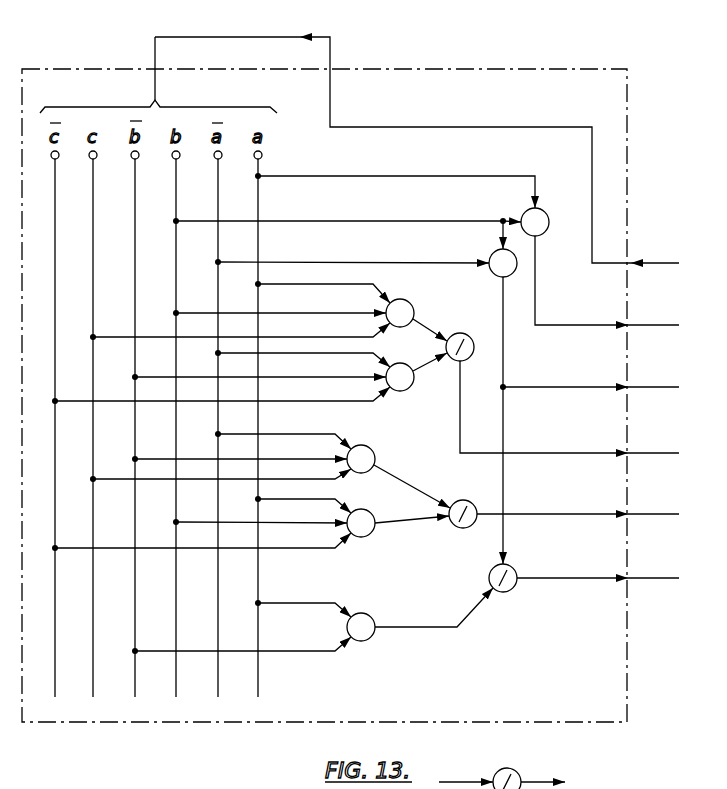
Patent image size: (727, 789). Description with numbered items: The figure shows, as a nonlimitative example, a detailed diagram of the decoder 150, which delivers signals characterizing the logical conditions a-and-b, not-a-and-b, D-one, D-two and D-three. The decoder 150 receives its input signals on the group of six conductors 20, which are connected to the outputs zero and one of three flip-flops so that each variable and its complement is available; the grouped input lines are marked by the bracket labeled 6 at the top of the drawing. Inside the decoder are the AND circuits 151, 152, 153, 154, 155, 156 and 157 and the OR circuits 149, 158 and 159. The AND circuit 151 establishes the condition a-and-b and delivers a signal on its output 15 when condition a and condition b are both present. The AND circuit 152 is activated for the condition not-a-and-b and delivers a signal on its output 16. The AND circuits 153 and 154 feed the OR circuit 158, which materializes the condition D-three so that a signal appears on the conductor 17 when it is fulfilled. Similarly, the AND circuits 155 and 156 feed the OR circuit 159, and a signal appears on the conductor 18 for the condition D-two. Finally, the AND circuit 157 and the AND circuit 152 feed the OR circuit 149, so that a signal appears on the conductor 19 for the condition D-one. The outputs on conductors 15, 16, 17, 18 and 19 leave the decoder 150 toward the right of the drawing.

The input bus 6 is at (158, 60).
The group of six conductors 20 is at (417, 139).
The decoder 150 is at (607, 88).
The AND circuit 151 is at (552, 230).
The AND circuit 152 is at (486, 255).
The AND circuit 153 is at (413, 301).
The AND circuit 154 is at (408, 393).
The AND circuit 155 is at (381, 450).
The AND circuit 156 is at (381, 535).
The AND circuit 157 is at (379, 617).
The OR circuit 158 is at (466, 336).
The OR circuit 159 is at (468, 503).
The OR circuit 149 is at (522, 570).
The output 15 is at (607, 281).
The output 16 is at (591, 378).
The conductor 17 is at (569, 407).
The conductor 18 is at (578, 501).
The conductor 19 is at (598, 566).